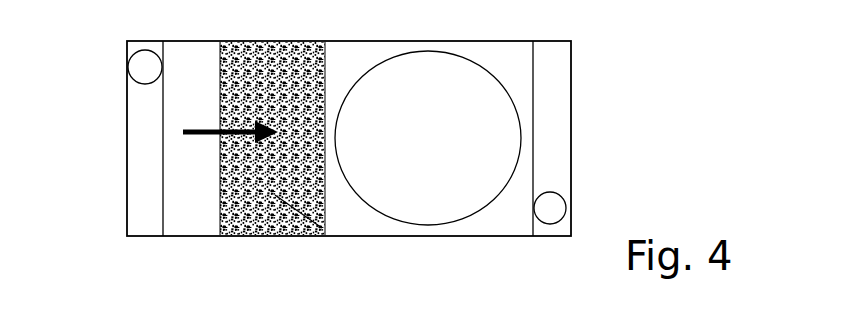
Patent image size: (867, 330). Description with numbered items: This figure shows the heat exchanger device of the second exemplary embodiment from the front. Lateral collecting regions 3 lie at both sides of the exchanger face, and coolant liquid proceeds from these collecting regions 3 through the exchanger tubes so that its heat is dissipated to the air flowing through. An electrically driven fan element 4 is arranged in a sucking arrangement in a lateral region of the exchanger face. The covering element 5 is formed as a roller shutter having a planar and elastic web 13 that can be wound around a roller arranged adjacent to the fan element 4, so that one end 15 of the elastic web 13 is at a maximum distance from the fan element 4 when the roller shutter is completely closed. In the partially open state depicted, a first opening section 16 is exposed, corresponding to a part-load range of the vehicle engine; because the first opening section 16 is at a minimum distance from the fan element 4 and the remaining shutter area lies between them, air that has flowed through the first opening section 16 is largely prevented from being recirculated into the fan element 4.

The lateral collecting regions 3 is at (130, 95).
The fan element 4 is at (450, 156).
The covering element 5 is at (322, 228).
The elastic web 13 is at (245, 218).
The end of the elastic web 15 is at (218, 212).
The first opening section 16 is at (202, 105).